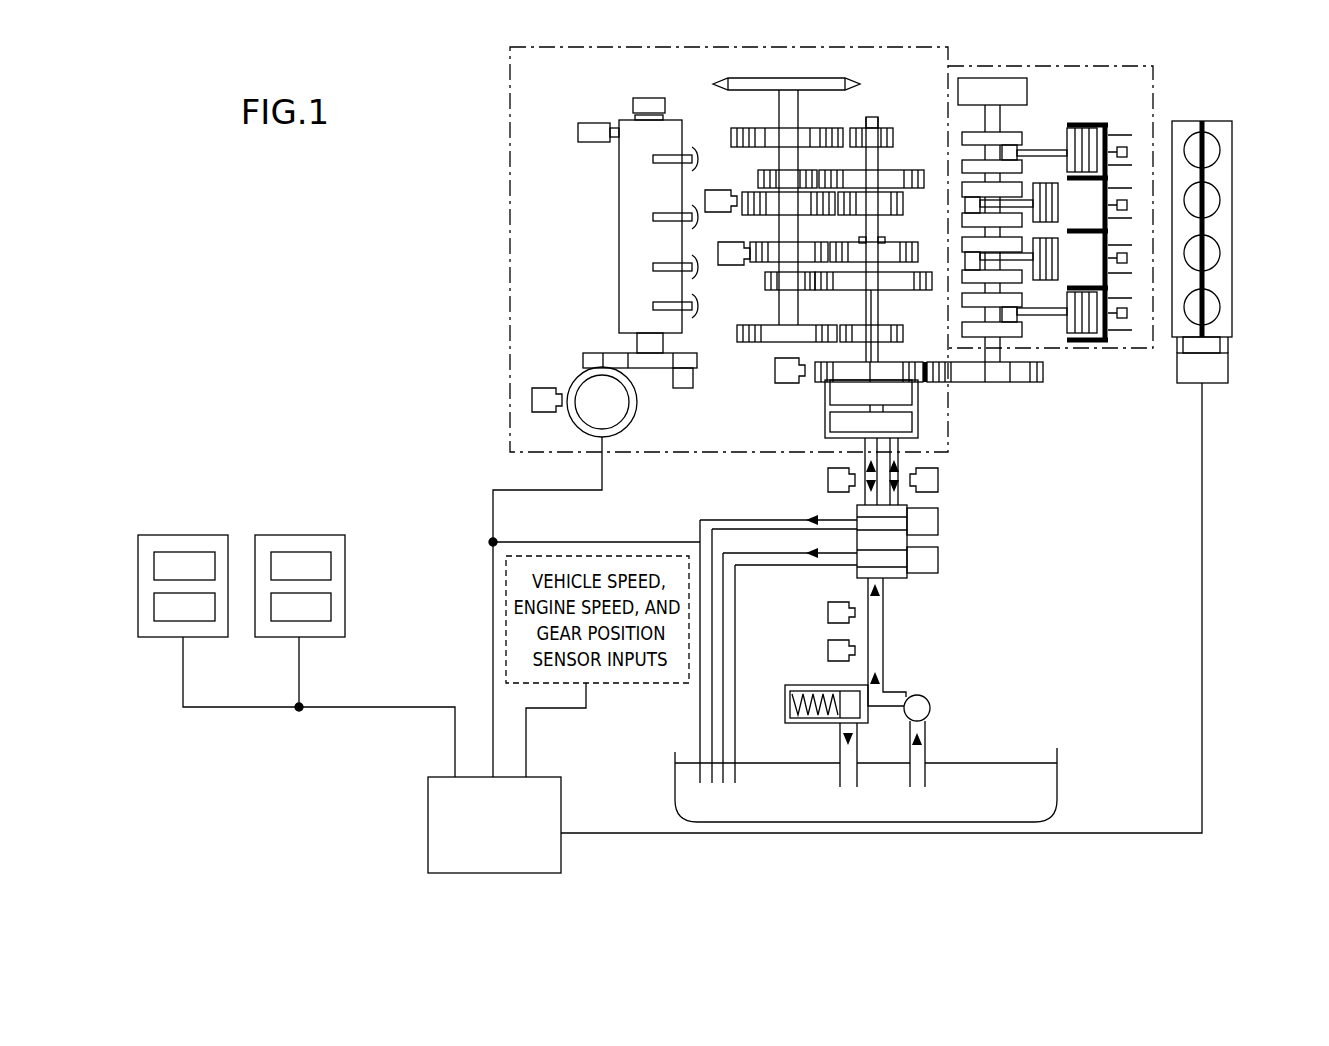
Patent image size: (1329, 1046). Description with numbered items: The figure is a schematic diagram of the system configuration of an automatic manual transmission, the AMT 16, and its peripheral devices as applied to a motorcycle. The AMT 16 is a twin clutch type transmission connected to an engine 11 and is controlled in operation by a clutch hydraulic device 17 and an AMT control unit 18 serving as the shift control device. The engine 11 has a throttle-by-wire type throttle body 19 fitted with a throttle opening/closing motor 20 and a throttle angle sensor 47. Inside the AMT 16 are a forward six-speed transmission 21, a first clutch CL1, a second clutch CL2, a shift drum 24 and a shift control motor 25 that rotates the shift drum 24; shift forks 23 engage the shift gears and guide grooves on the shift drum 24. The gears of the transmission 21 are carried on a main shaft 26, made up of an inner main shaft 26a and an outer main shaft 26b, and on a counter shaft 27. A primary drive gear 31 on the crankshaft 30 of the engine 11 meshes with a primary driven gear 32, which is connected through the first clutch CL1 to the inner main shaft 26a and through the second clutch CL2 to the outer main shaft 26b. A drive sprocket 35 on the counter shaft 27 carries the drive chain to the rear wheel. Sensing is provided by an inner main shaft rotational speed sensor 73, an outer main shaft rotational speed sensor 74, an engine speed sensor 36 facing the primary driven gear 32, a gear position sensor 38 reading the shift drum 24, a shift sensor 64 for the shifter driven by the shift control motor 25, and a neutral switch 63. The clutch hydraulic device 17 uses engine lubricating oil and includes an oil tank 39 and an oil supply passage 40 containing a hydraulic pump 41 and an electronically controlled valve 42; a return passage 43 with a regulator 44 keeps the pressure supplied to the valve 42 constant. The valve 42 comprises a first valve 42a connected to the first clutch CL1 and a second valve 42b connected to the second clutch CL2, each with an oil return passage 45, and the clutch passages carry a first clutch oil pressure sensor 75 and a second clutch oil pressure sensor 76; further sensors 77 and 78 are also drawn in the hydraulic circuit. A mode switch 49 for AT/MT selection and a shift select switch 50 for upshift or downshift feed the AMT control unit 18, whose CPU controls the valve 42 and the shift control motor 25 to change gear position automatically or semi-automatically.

The engine 11 is at (1160, 91).
The automatic manual transmission (AMT) 16 is at (506, 146).
The clutch hydraulic device 17 is at (1058, 688).
The AMT control unit 18 is at (541, 777).
The throttle body 19 is at (1234, 142).
The throttle opening/closing motor 20 is at (1222, 386).
The transmission 21 is at (710, 406).
The shift forks 23 is at (653, 162).
The shift drum 24 is at (678, 128).
The shift control motor 25 is at (578, 380).
The main shaft 26 is at (886, 226).
The inner main shaft 26a is at (923, 383).
The outer main shaft 26b is at (925, 427).
The counter shaft 27 is at (783, 317).
The crankshaft 30 is at (1000, 354).
The primary drive gear 31 is at (1043, 372).
The primary driven gear 32 is at (818, 380).
The drive sprocket 35 is at (785, 80).
The engine speed sensor 36 is at (775, 371).
The gear position sensor 38 is at (633, 104).
The oil tank 39 is at (682, 786).
The oil supply passage 40 is at (884, 658).
The hydraulic pump 41 is at (932, 710).
The valve 42 is at (968, 544).
The first valve 42a is at (940, 522).
The second valve 42b is at (940, 558).
The return passage 43 is at (840, 755).
The regulator 44 is at (790, 687).
The oil return passages 45 is at (730, 706).
The throttle angle sensor 47 is at (1222, 350).
The mode switch 49 is at (320, 535).
The shift select switch 50 is at (200, 535).
The neutral switch 63 is at (578, 131).
The shift sensor 64 is at (547, 412).
The inner main shaft rotational speed sensor 73 is at (705, 200).
The outer main shaft rotational speed sensor 74 is at (718, 252).
The first clutch oil pressure sensor 75 is at (940, 481).
The second clutch oil pressure sensor 76 is at (828, 481).
The oil pressure sensor 77 is at (828, 612).
The oil temperature sensor 78 is at (828, 650).
The first clutch CL1 is at (912, 425).
The second clutch CL2 is at (912, 400).